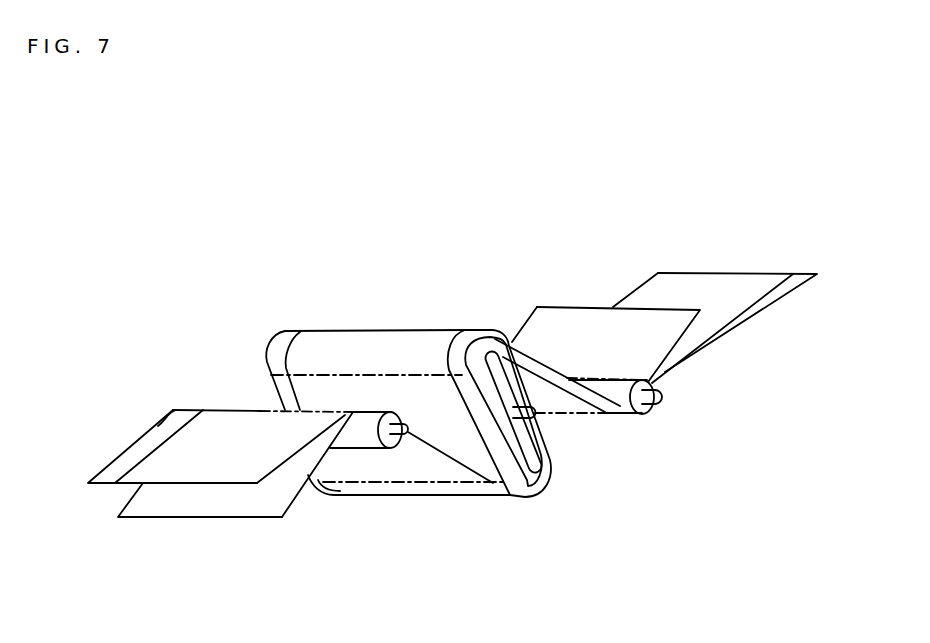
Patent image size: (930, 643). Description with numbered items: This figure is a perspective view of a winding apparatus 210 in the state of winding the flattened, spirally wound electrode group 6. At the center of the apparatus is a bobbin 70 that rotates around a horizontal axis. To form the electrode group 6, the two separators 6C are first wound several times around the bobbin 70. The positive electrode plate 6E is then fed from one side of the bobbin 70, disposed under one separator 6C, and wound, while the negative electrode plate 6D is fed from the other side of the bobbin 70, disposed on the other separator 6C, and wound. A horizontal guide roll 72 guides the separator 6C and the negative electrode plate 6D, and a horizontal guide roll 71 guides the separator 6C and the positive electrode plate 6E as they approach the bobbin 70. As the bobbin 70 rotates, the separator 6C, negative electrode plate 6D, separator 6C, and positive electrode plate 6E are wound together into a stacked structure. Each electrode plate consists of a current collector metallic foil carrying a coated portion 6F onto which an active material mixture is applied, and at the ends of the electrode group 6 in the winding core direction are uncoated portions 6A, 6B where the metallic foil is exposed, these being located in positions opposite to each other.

The winding apparatus 210 is at (453, 219).
The electrode group 6 is at (260, 329).
The uncoated portion 6A is at (700, 353).
The uncoated portion 6B is at (123, 465).
The separator 6C is at (252, 510).
The negative electrode plate 6D is at (254, 460).
The positive electrode plate 6E is at (670, 363).
The coated portion 6F is at (270, 477).
The bobbin 70 is at (490, 357).
The horizontal guide roll 71 is at (647, 413).
The horizontal guide roll 72 is at (360, 445).